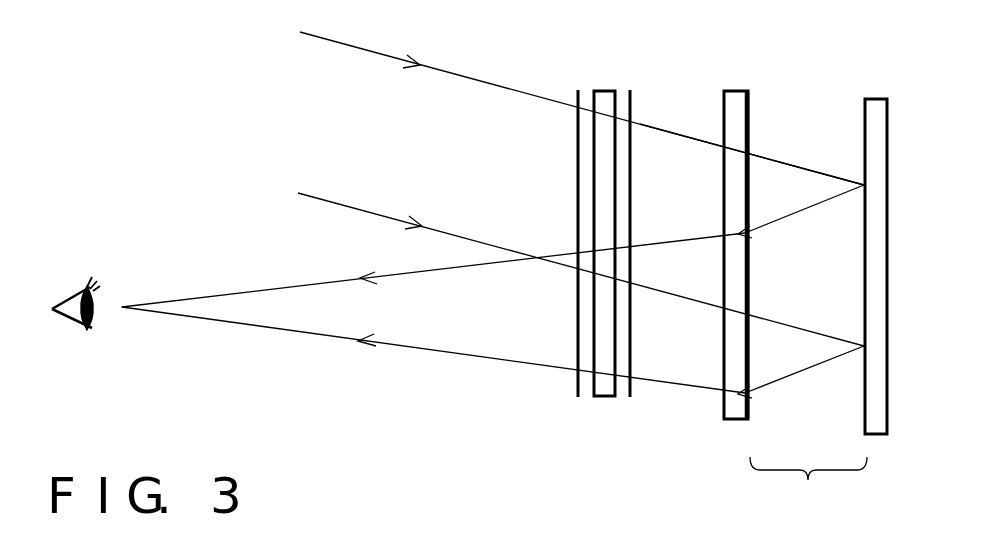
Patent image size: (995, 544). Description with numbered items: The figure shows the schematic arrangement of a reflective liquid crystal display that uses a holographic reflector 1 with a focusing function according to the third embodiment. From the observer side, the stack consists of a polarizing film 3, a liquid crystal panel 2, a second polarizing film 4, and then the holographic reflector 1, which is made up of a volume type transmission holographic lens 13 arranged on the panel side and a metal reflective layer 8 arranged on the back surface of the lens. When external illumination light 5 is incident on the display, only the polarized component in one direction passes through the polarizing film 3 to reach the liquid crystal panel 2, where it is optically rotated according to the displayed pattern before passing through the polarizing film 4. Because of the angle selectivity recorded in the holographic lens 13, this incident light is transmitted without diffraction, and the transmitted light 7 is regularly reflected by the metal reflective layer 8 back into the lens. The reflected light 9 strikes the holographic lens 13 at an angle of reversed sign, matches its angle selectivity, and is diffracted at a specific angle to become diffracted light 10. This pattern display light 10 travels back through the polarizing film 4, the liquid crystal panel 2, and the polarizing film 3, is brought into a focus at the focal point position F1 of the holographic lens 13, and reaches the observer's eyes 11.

The holographic reflector 1 is at (808, 490).
The liquid crystal panel 2 is at (604, 89).
The polarizing film 3 is at (578, 88).
The polarizing film 4 is at (631, 89).
The incident light 5 is at (300, 32).
The transmitted light 7 is at (787, 163).
The metal reflective layer 8 is at (878, 97).
The reflected light 9 is at (795, 213).
The diffracted light 10 is at (281, 288).
The observer's eyes 11 is at (75, 332).
The volume type transmission holographic lens 13 is at (736, 89).
The focal point position F1 is at (128, 301).